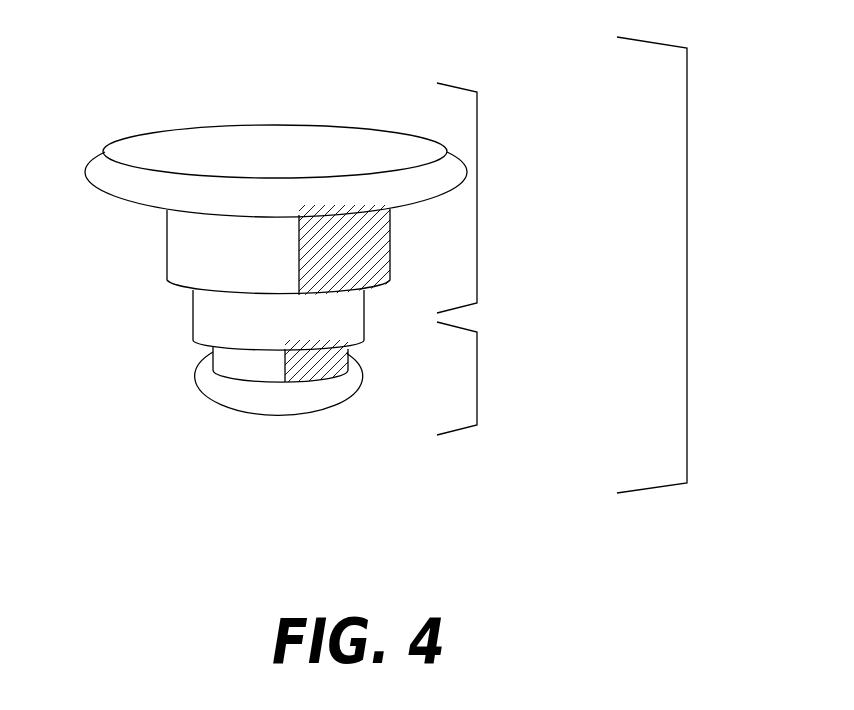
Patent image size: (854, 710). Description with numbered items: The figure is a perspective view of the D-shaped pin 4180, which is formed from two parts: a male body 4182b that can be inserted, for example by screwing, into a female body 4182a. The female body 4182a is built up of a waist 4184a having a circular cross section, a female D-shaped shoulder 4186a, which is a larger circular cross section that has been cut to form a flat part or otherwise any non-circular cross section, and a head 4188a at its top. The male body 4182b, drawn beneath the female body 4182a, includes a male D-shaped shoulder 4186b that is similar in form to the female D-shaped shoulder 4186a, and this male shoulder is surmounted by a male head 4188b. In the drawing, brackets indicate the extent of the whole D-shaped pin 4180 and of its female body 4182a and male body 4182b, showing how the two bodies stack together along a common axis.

The D-shaped pin 4180 is at (687, 268).
The female body 4182a is at (477, 207).
The male body 4182b is at (477, 375).
The waist 4184a is at (193, 322).
The female D-shaped shoulder 4186a is at (167, 255).
The male D-shaped shoulder 4186b is at (207, 350).
The head 4188a is at (193, 129).
The male head 4188b is at (235, 410).